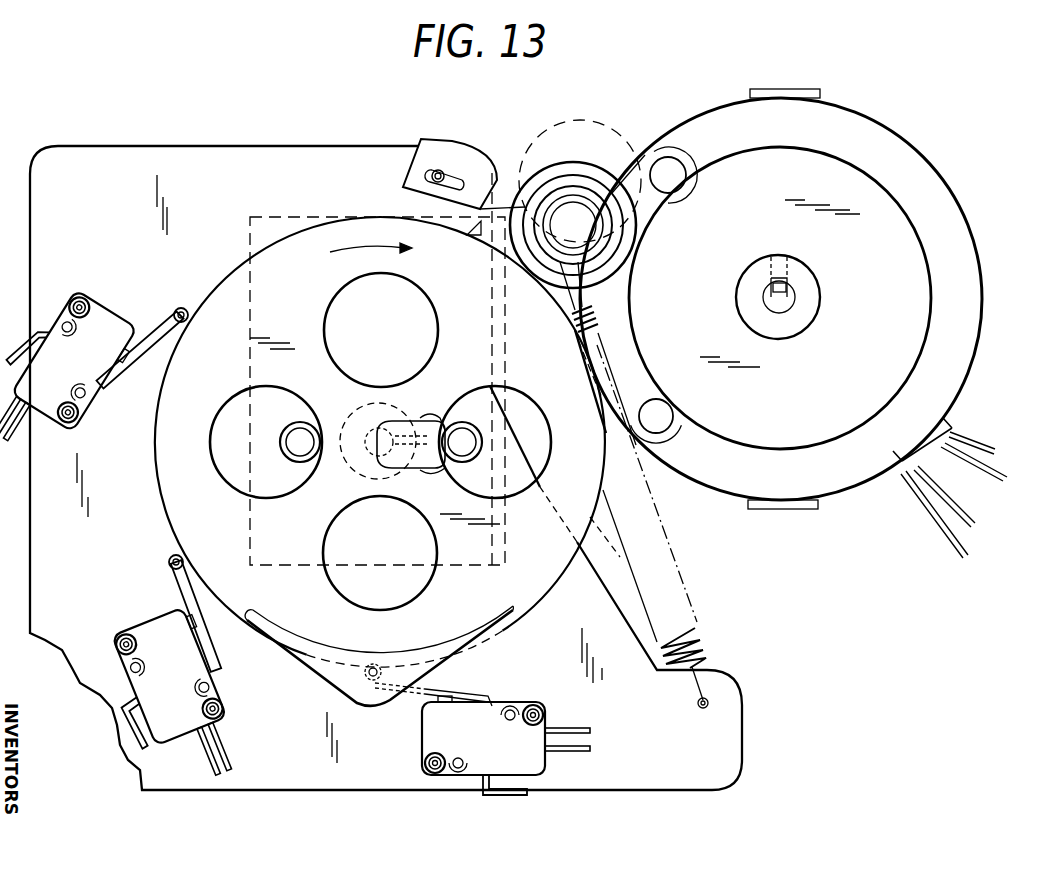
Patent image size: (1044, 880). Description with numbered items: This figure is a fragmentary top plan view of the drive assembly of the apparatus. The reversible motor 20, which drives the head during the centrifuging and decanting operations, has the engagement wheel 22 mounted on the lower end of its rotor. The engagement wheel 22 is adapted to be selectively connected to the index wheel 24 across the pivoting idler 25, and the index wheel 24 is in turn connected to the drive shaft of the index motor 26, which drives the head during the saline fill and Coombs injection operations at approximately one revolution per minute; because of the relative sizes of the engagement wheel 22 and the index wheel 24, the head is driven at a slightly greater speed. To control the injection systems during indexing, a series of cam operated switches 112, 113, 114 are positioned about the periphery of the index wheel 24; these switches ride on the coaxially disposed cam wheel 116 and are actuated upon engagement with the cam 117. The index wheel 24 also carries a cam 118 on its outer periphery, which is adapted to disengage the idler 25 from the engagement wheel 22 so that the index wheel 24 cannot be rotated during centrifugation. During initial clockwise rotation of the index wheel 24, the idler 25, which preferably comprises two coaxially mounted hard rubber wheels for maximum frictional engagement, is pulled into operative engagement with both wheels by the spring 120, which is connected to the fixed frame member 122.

The reversible motor 20 is at (965, 256).
The engagement wheel 22 is at (892, 266).
The index wheel 24 is at (237, 283).
The pivoting idler 25 is at (583, 162).
The index motor 26 is at (288, 215).
The cam operated switch 112 is at (160, 637).
The cam operated switch 113 is at (95, 372).
The cam operated switch 114 is at (487, 718).
The cam wheel 116 is at (307, 653).
The cam 117 is at (442, 207).
The cam 118 is at (357, 704).
The spring 120 is at (706, 637).
The fixed frame member 122 is at (716, 752).